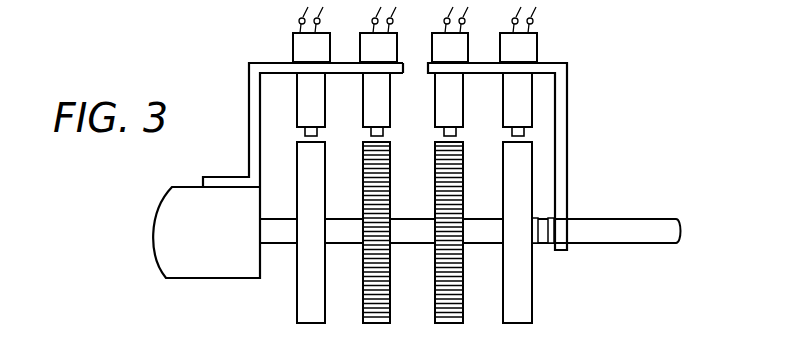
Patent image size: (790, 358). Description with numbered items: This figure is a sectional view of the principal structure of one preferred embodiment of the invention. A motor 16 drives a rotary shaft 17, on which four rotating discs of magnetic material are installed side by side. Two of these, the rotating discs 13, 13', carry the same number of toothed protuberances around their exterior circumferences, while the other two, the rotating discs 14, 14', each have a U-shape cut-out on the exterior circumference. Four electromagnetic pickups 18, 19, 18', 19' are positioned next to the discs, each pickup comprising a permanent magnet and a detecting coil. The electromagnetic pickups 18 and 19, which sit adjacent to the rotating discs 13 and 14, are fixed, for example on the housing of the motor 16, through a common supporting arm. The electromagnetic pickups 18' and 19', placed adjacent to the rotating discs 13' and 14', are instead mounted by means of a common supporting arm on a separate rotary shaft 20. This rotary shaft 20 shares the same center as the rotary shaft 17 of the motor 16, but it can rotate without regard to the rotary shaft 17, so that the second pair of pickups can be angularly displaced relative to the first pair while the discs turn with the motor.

The rotating disc 13 is at (386, 246).
The rotating disc 13' is at (461, 246).
The rotating disc 14 is at (315, 250).
The rotating disc 14' is at (529, 246).
The motor 16 is at (209, 267).
The rotary shaft 17 is at (287, 238).
The electromagnetic pickup 18 is at (393, 68).
The electromagnetic pickup 18' is at (472, 68).
The electromagnetic pickup 19 is at (296, 71).
The electromagnetic pickup 19' is at (543, 68).
The rotary shaft 20 is at (655, 230).